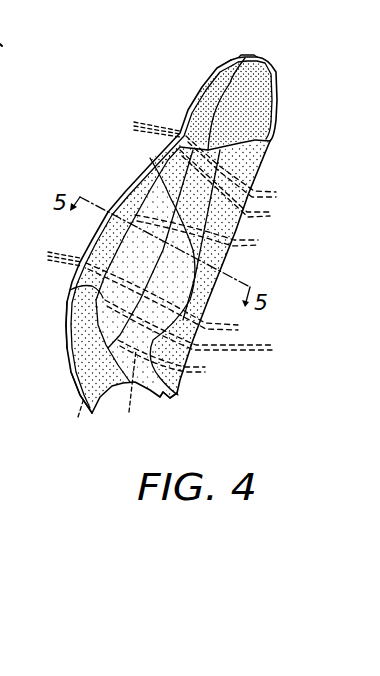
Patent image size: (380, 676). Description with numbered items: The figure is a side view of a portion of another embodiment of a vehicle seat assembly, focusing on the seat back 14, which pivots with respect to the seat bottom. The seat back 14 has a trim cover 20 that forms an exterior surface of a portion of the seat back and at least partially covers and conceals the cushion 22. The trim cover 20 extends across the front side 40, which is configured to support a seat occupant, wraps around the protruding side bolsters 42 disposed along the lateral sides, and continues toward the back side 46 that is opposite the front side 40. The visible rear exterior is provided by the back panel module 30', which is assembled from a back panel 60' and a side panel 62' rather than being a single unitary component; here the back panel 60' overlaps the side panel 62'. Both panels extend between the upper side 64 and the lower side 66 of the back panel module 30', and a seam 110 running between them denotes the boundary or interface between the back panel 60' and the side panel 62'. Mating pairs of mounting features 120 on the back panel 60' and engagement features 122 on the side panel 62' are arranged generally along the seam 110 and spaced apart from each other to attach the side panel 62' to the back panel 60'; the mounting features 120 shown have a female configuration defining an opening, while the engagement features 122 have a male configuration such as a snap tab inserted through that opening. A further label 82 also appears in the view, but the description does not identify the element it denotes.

The seat back 14 is at (284, 113).
The trim cover 20 is at (168, 123).
The cushion 22 is at (193, 92).
The upper side 64 is at (245, 57).
The back panel module 30' is at (257, 224).
The front side 40 is at (108, 187).
The side bolsters 42 is at (62, 298).
The back side 46 is at (257, 274).
The back panel 60' is at (187, 419).
The side panel 62' is at (100, 264).
The lower side 66 is at (77, 375).
The seam 110 is at (150, 158).
The mounting features 120 is at (158, 277).
The engagement features 122 is at (206, 286).
The element of adjacent figure 82 is at (0, 528).